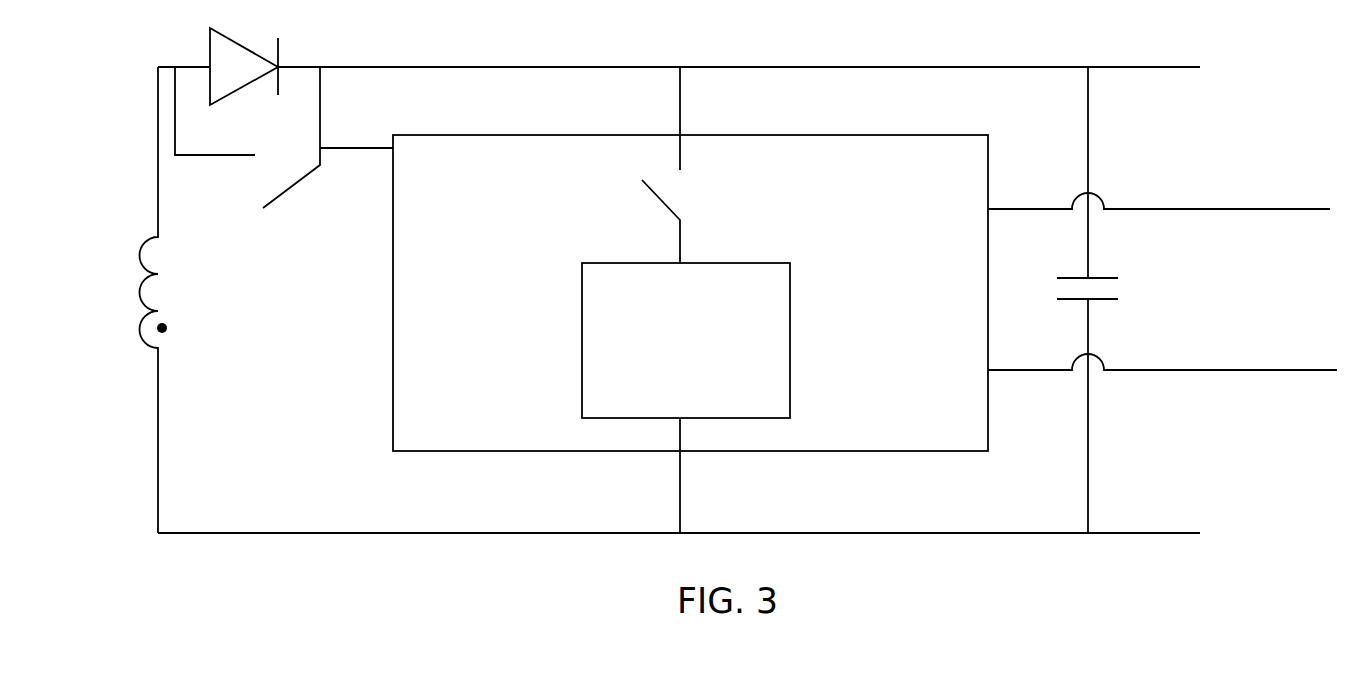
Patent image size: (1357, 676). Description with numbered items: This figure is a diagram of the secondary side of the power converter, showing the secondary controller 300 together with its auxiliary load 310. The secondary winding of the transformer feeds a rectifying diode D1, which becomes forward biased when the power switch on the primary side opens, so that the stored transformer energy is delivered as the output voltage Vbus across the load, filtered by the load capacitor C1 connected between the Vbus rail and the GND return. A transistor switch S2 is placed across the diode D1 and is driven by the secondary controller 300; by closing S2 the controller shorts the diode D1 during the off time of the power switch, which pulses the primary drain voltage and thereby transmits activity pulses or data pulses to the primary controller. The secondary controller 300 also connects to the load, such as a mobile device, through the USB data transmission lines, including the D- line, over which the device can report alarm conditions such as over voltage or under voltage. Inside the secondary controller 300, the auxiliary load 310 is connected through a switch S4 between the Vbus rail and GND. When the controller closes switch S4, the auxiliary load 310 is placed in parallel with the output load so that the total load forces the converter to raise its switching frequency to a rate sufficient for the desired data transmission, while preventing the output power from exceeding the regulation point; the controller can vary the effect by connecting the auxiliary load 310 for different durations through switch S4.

The rectifying diode D1 is at (225, 66).
The transistor switch S2 is at (284, 137).
The switch S4 is at (678, 165).
The secondary controller 300 is at (455, 232).
The auxiliary load 310 is at (708, 383).
The load capacitor C1 is at (1081, 300).
The output voltage Vbus is at (1200, 54).
The data transmission line D- is at (1162, 355).
The ground line GND is at (693, 519).